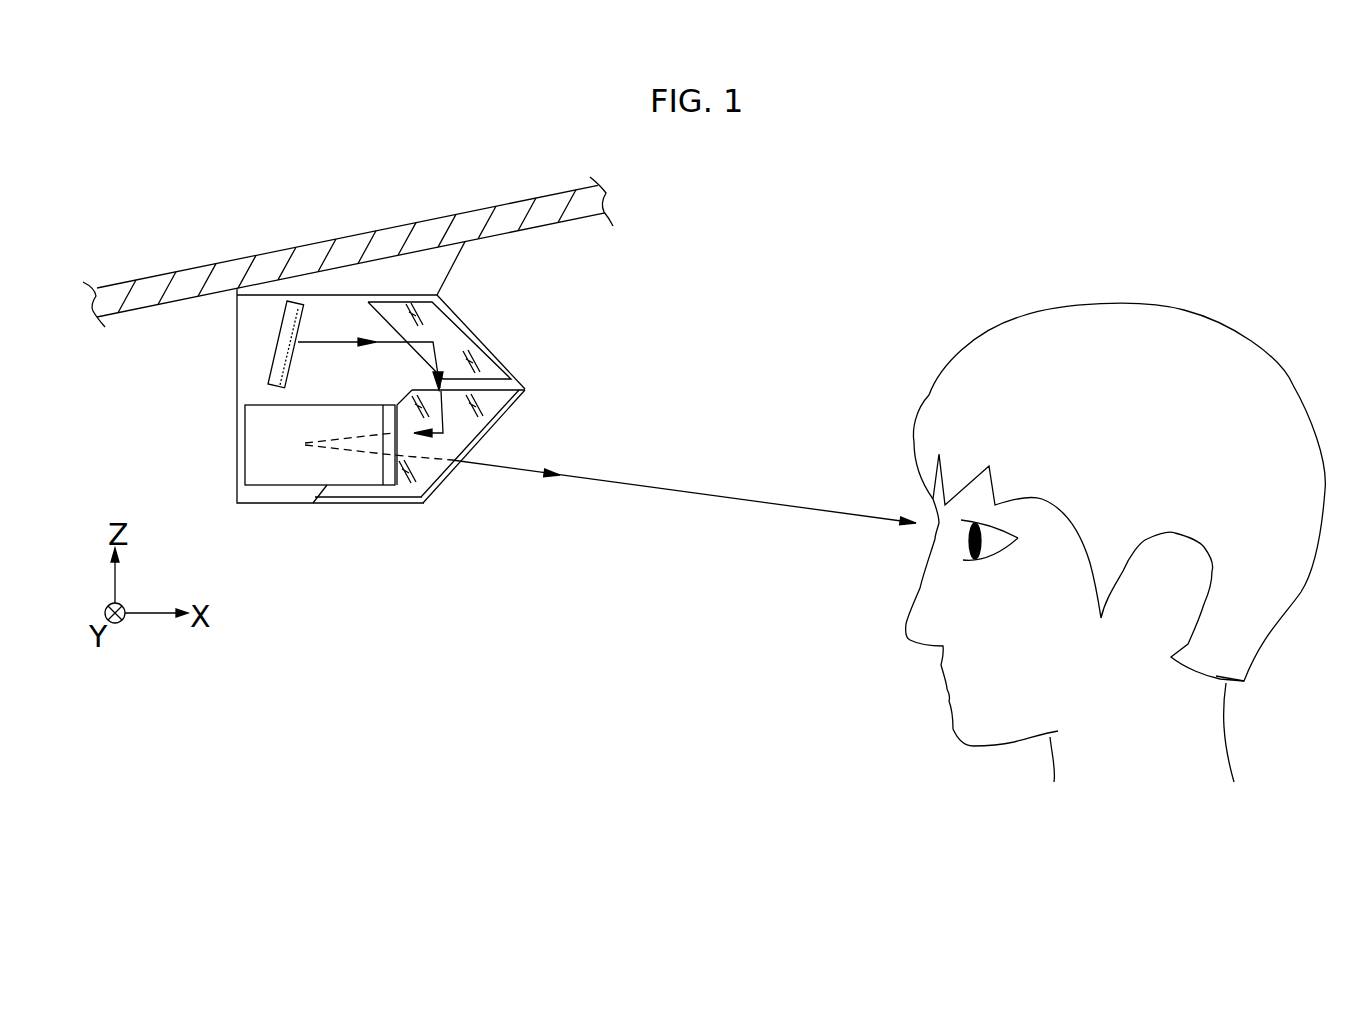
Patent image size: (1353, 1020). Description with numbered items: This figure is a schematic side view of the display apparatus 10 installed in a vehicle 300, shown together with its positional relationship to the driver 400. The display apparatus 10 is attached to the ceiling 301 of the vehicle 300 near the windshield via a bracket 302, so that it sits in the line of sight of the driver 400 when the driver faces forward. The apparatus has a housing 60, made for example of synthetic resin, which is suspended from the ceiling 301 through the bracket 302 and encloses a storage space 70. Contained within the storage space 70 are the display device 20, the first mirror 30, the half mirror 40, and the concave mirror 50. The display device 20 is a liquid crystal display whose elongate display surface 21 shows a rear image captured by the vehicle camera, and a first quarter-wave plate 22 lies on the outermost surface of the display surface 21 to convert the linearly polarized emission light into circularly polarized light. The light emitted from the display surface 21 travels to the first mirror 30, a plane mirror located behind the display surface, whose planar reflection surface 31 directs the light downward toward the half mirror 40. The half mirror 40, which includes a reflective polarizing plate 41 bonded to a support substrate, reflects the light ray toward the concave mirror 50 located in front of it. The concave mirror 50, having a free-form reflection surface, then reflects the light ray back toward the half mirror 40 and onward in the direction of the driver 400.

The display apparatus 10 is at (509, 383).
The display device 20 is at (309, 349).
The display surface 21 is at (307, 323).
The first λ/4 plate 22 is at (307, 318).
The first mirror 30 is at (614, 406).
The reflection surface 31 is at (458, 342).
The half mirror 40 is at (447, 480).
The reflective polarizing plate 41 is at (495, 408).
The concave mirror 50 is at (253, 457).
The housing 60 is at (237, 367).
The storage space 70 is at (360, 388).
The vehicle 300 is at (348, 241).
The ceiling 301 is at (387, 241).
The bracket 302 is at (447, 263).
The driver 400 is at (930, 395).